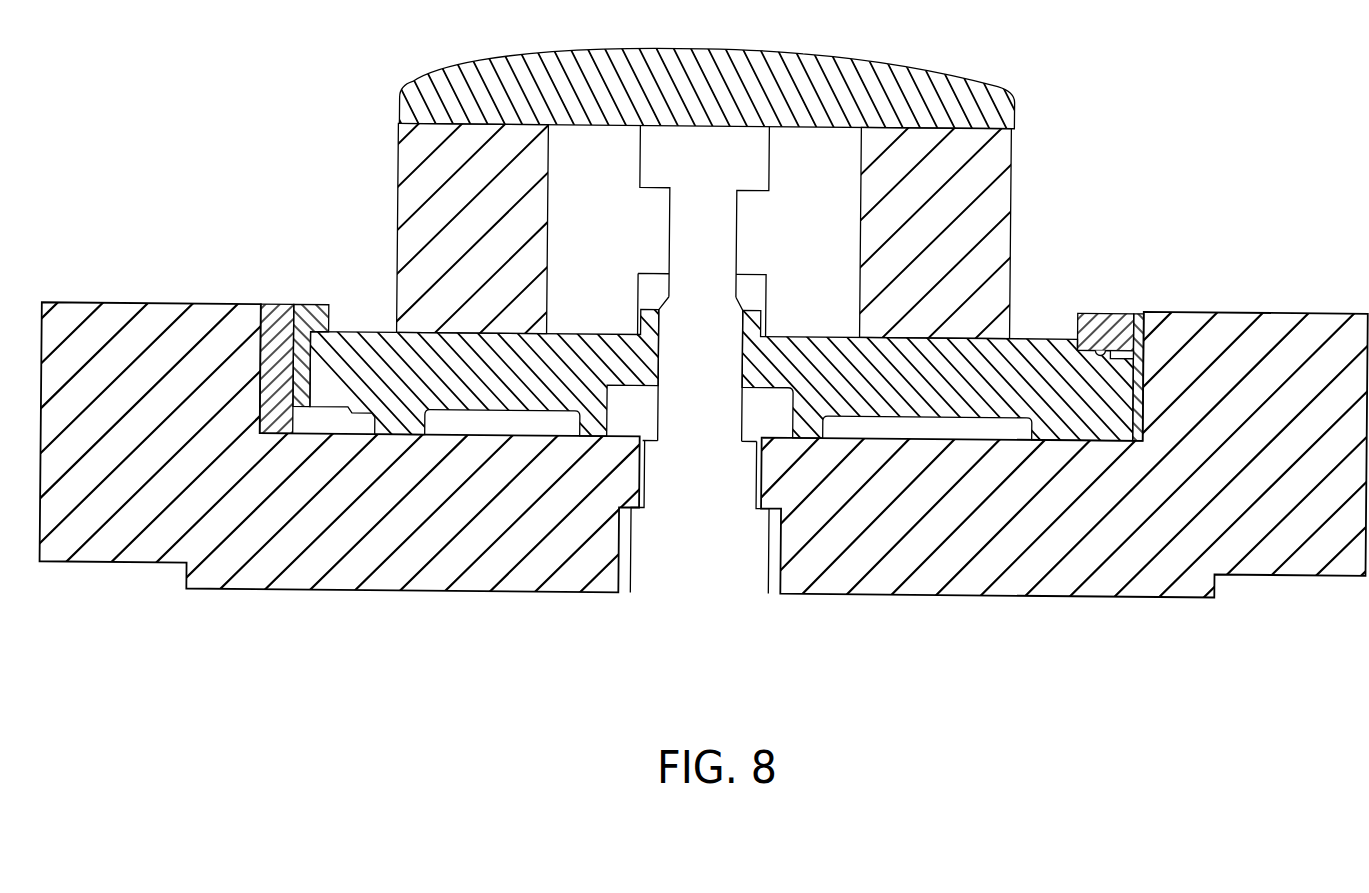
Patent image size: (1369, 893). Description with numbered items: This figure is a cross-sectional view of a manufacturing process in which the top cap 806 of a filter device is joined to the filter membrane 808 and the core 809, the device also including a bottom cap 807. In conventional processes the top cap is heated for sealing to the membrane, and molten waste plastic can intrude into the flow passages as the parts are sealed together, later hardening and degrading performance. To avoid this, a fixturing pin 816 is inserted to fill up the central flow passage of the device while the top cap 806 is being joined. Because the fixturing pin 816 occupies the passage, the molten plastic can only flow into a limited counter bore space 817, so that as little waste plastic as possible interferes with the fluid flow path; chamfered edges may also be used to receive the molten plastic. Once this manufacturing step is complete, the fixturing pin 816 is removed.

The top cap 806 is at (342, 361).
The bottom cap 807 is at (422, 97).
The filter membrane 808 is at (438, 211).
The core 809 is at (813, 161).
The fixturing pin 816 is at (700, 535).
The counter bore space 817 is at (752, 289).